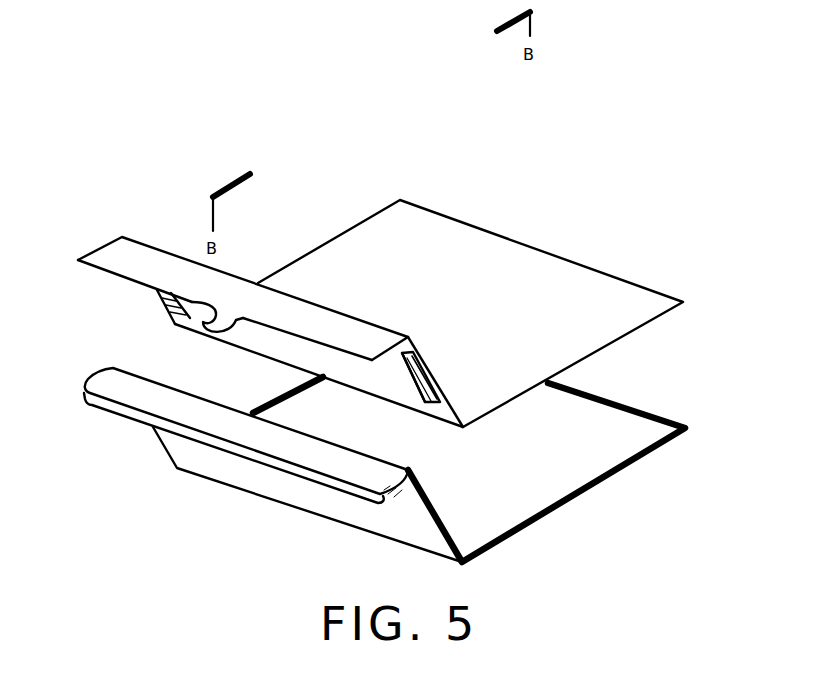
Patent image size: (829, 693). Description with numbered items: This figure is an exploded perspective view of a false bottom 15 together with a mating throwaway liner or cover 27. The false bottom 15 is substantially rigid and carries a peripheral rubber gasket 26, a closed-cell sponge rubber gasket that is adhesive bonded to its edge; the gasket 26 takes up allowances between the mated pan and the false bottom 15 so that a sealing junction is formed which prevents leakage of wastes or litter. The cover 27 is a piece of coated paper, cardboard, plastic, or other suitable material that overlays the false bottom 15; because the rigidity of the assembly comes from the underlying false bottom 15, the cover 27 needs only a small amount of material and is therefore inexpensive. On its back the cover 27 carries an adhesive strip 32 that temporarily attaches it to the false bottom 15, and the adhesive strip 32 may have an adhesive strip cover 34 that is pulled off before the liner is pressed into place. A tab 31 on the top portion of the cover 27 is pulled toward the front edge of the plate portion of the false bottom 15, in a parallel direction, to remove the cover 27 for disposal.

The false bottom 15 is at (100, 373).
The peripheral rubber gasket 26 is at (685, 424).
The throwaway liner or cover 27 is at (622, 274).
The tab 31 is at (213, 316).
The adhesive strip 32 is at (433, 388).
The adhesive strip cover 34 is at (412, 377).